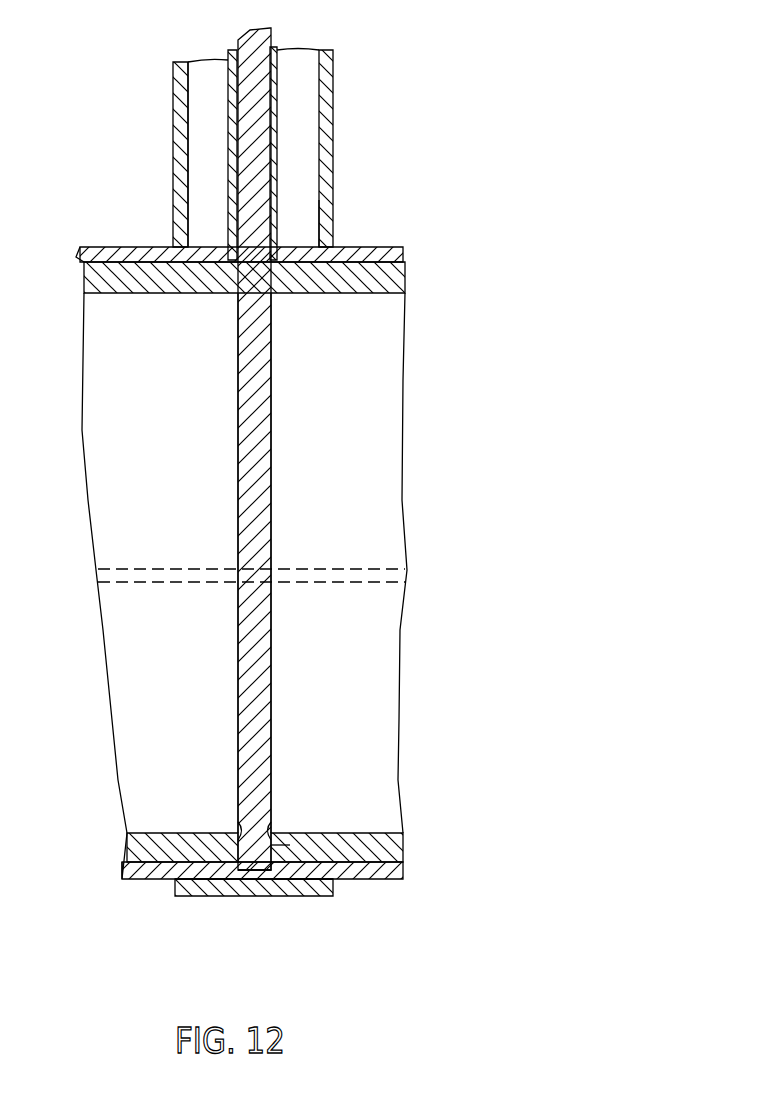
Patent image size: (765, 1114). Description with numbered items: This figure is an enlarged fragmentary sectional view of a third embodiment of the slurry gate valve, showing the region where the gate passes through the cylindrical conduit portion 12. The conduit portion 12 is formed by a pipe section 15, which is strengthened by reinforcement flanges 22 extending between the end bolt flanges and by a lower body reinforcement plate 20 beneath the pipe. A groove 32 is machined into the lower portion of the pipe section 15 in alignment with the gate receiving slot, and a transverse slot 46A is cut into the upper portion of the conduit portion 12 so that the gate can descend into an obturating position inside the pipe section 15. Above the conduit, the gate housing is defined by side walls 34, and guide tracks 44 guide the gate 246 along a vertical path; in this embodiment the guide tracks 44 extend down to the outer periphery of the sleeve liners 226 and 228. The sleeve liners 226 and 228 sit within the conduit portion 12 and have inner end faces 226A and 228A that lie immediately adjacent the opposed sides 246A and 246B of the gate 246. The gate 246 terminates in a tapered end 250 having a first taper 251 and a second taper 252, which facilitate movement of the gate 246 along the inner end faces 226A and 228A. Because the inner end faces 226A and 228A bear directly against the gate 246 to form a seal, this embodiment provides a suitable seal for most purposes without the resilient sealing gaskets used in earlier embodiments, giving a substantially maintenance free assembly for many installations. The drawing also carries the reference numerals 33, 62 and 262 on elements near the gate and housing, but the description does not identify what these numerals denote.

The gate 246 is at (250, 36).
The opposed side of gate 246A is at (238, 410).
The opposed side of gate 246B is at (271, 423).
The inner sleeve 262 is at (280, 150).
The guide tracks 44 is at (280, 62).
The side walls 34 is at (173, 150).
The annular space 33 is at (305, 85).
The transverse slot 46A is at (183, 213).
The wall portion 62 is at (322, 223).
The reinforcement flanges 22 is at (353, 569).
The sleeve liner 226 is at (130, 845).
The sleeve liner 228 is at (390, 845).
The inner end face 226A is at (240, 823).
The inner end face 228A is at (263, 825).
The tapered end 250 is at (273, 848).
The pipe section 15 is at (380, 880).
The lower body reinforcement plate 20 is at (307, 897).
The groove 32 is at (220, 877).
The second taper 252 is at (273, 883).
The first taper 251 is at (247, 873).
The cylindrical conduit portion 12 is at (128, 880).